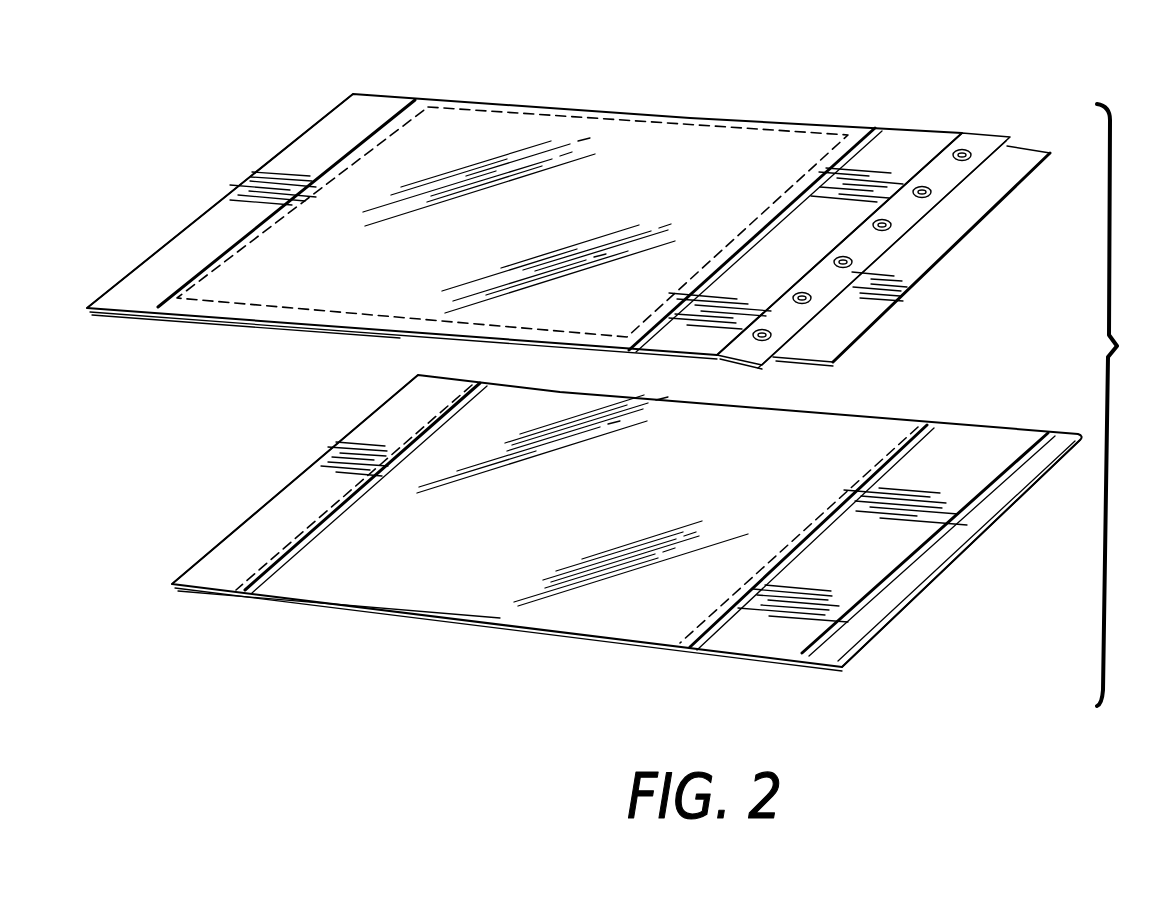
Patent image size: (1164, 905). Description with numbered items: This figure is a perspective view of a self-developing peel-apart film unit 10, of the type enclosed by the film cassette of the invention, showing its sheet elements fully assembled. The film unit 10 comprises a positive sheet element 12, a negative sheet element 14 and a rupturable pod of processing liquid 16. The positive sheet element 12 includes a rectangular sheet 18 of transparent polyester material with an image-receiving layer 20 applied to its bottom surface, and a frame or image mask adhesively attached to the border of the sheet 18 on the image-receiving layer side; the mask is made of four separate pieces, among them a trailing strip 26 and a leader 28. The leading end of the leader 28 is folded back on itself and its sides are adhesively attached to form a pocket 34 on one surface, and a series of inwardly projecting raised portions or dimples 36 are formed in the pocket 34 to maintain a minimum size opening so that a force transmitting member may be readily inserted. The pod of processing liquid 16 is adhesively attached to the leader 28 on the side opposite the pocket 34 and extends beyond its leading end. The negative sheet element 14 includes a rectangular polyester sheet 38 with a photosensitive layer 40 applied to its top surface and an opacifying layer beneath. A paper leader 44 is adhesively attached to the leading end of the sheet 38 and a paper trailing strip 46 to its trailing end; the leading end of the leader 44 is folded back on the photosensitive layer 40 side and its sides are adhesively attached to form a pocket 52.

The self-developing peel-apart film unit 10 is at (1123, 405).
The positive sheet element 12 is at (828, 104).
The negative sheet element 14 is at (268, 470).
The rupturable pod of processing liquid 16 is at (808, 362).
The rectangular sheet 18 is at (475, 120).
The image-receiving layer 20 is at (213, 318).
The trailing strip 26 is at (211, 208).
The leader 28 is at (647, 358).
The pocket 34 is at (831, 223).
The dimples 36 is at (855, 262).
The rectangular sheet 38 is at (433, 623).
The photosensitive layer 40 is at (334, 590).
The leader 44 is at (988, 447).
The trailing strip 46 is at (228, 562).
The pocket 52 is at (930, 482).